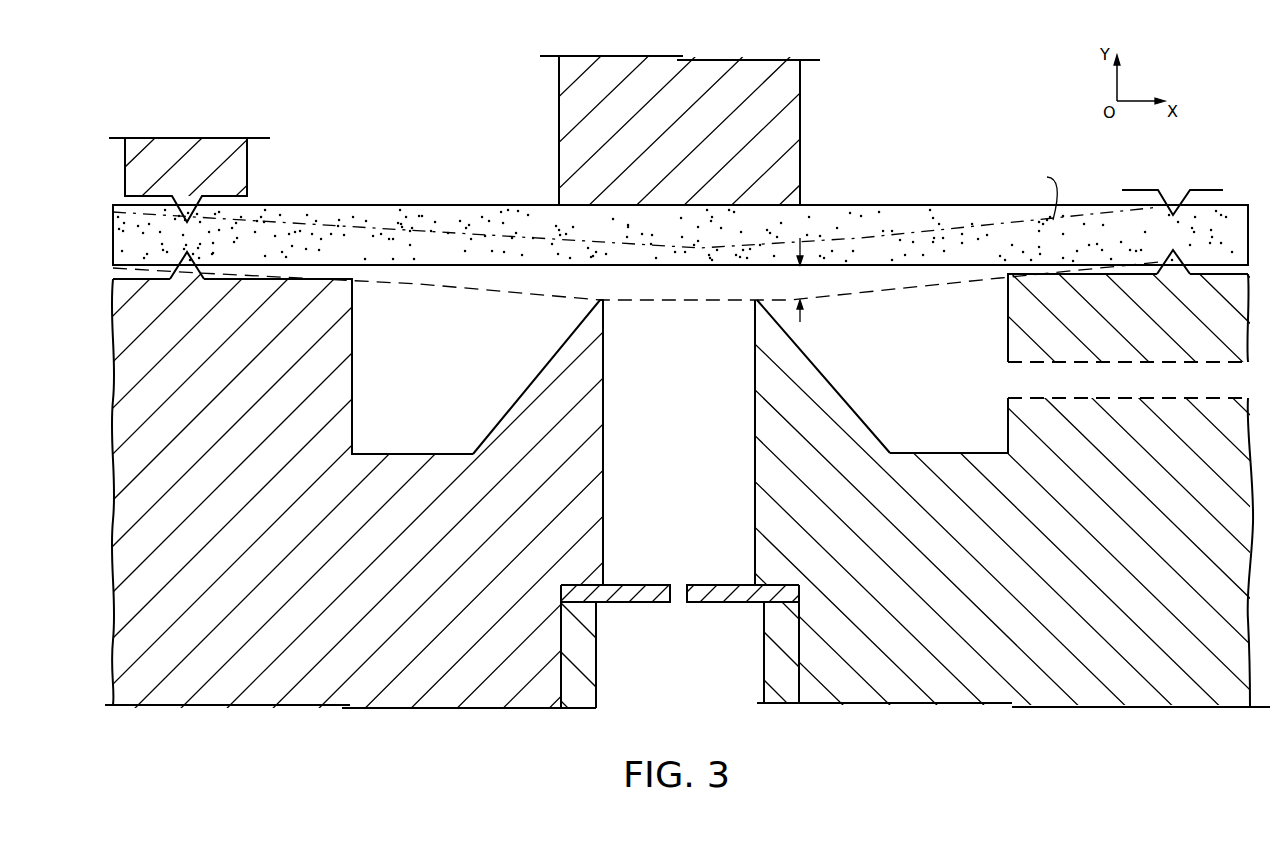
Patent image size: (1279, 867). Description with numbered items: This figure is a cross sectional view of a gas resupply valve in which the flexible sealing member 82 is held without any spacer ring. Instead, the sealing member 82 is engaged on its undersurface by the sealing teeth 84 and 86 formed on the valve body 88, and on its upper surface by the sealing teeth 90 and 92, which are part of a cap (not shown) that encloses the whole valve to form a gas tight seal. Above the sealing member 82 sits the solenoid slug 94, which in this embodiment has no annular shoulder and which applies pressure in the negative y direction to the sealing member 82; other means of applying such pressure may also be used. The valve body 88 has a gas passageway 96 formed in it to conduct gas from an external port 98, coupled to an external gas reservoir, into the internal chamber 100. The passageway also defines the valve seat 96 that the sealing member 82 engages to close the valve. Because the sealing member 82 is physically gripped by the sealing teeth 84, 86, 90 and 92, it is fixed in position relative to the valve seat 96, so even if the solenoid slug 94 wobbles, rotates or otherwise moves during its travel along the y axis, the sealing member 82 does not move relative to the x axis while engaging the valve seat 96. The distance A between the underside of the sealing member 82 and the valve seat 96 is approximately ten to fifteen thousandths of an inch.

The sealing member 82 is at (495, 213).
The sealing tooth 84 is at (186, 280).
The sealing tooth 86 is at (1174, 268).
The valve body 88 is at (996, 547).
The sealing tooth 90 is at (184, 197).
The sealing tooth 92 is at (1175, 200).
The solenoid slug 94 is at (785, 150).
The gas passageway / valve seat 96 is at (755, 303).
The external port 98 is at (1215, 386).
The internal chamber 100 is at (928, 392).